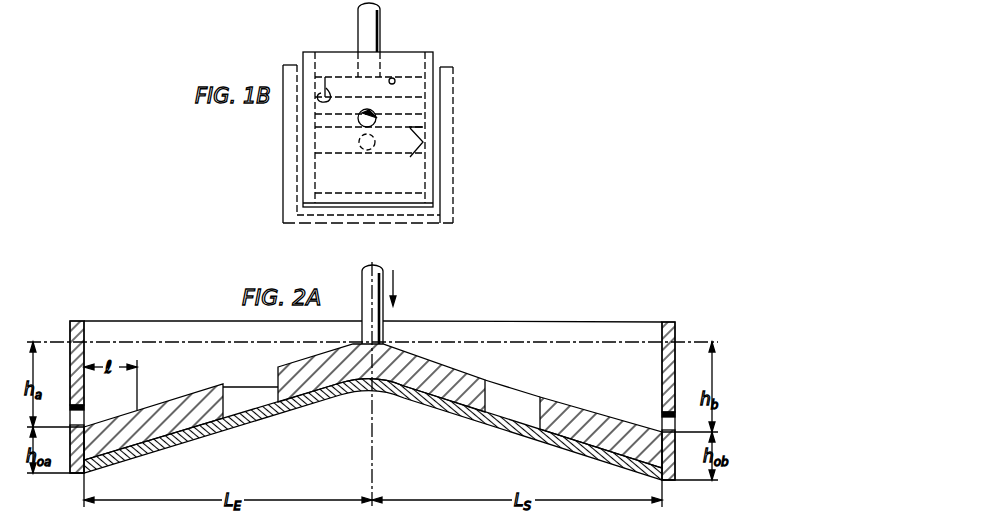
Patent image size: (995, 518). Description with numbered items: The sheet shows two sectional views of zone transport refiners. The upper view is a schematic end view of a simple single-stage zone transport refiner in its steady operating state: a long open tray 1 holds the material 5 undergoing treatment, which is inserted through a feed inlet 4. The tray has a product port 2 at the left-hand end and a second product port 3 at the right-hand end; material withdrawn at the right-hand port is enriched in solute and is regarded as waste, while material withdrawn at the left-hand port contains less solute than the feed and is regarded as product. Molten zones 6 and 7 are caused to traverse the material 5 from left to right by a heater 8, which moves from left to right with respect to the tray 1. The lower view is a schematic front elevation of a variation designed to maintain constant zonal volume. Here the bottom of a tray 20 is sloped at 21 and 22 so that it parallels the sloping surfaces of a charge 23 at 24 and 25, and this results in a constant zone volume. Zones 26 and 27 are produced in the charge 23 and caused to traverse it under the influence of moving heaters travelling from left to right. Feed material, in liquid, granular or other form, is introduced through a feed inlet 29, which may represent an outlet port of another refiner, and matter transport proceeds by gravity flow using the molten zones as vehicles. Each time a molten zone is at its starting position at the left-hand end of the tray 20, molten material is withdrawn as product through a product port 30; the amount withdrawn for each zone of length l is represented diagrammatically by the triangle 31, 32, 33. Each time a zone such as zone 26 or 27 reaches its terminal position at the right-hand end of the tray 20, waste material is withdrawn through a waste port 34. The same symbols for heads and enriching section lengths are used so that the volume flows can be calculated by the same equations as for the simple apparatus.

In FIG. 1B, the open tray 1 is at (433, 60).
In FIG. 1B, the product port 2 is at (378, 142).
In FIG. 1B, the second product port 3 is at (378, 116).
In FIG. 1B, the feed inlet 4 is at (378, 27).
In FIG. 1B, the material undergoing treatment 5 is at (372, 114).
In FIG. 1B, the molten zone 6 is at (423, 122).
In FIG. 1B, the molten zone 7 is at (326, 88).
In FIG. 1B, the heater 8 is at (287, 216).
In FIG. 2A, the tray 20 is at (72, 473).
In FIG. 2A, the sloped bottom portion 21 is at (220, 434).
In FIG. 2A, the sloped bottom portion 22 is at (531, 441).
In FIG. 2A, the charge 23 is at (199, 401).
In FIG. 2A, the sloping surface of charge 24 is at (207, 388).
In FIG. 2A, the sloping surface of charge 25 is at (573, 400).
In FIG. 2A, the zone 26 is at (250, 387).
In FIG. 2A, the zone 27 is at (517, 393).
In FIG. 2A, the feed inlet 29 is at (383, 272).
In FIG. 2A, the product port 30 is at (86, 410).
In FIG. 2A, the triangle vertex 31 is at (84, 432).
In FIG. 2A, the triangle vertex 32 is at (149, 432).
In FIG. 2A, the triangle vertex 33 is at (134, 411).
In FIG. 2A, the waste port 34 is at (662, 414).